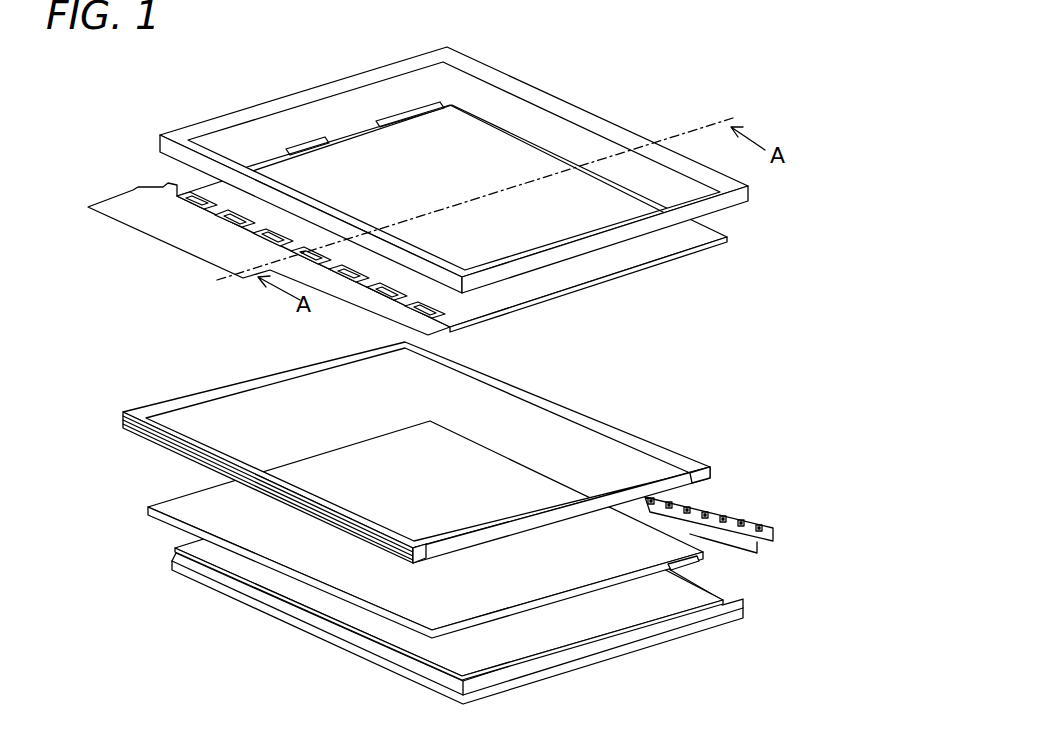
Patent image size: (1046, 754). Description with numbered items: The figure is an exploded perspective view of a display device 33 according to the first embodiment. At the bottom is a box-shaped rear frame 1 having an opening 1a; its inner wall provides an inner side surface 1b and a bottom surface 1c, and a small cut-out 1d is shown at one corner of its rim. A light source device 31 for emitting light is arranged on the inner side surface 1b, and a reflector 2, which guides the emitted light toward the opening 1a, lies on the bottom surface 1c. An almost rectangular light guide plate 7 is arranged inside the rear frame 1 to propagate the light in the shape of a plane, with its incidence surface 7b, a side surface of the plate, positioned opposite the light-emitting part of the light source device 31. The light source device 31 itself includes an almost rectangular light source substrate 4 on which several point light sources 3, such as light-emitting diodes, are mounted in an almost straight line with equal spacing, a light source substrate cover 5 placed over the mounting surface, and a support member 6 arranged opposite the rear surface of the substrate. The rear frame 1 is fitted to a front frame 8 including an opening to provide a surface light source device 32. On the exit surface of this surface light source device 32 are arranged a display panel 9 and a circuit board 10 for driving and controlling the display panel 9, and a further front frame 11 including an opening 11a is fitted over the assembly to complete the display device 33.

The rear frame 1 is at (172, 566).
The opening 1a is at (507, 667).
The inner side surface 1b is at (722, 597).
The bottom surface 1c is at (607, 635).
The notch in chassis 1d is at (663, 643).
The reflector 2 is at (197, 550).
The point light source 3 is at (747, 527).
The light source substrate 4 is at (733, 522).
The light source substrate cover 5 is at (713, 508).
The support member 6 is at (703, 500).
The light guide plate 7 is at (197, 510).
The incidence surface 7b is at (716, 545).
The front frame 8 is at (603, 417).
The display panel 9 is at (690, 242).
The circuit board 10 is at (150, 205).
The front frame 11 is at (523, 95).
The opening 11a is at (553, 125).
The light source device 31 is at (783, 432).
The surface light source device 32 is at (120, 402).
The display device 33 is at (303, 647).